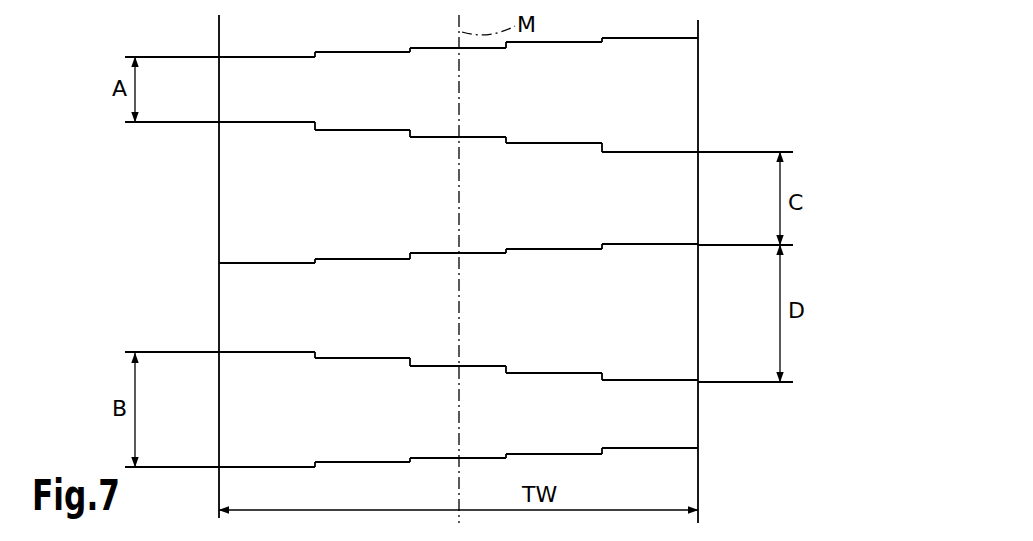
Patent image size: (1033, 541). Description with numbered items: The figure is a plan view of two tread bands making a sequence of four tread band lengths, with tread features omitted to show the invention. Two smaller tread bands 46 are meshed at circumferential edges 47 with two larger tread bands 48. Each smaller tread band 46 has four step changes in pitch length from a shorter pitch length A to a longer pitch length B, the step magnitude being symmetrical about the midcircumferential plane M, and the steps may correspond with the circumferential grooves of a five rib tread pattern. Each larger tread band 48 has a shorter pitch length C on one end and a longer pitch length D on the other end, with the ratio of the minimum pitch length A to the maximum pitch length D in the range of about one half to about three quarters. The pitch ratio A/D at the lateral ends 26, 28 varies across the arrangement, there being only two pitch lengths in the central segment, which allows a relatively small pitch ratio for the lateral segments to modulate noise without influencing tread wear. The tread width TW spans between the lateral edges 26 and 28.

The lateral end 26 is at (459, 269).
The lateral end 28 is at (219, 209).
The tread band 46 is at (682, 83).
The circumferential edges 47 is at (531, 141).
The larger tread band 48 is at (653, 209).